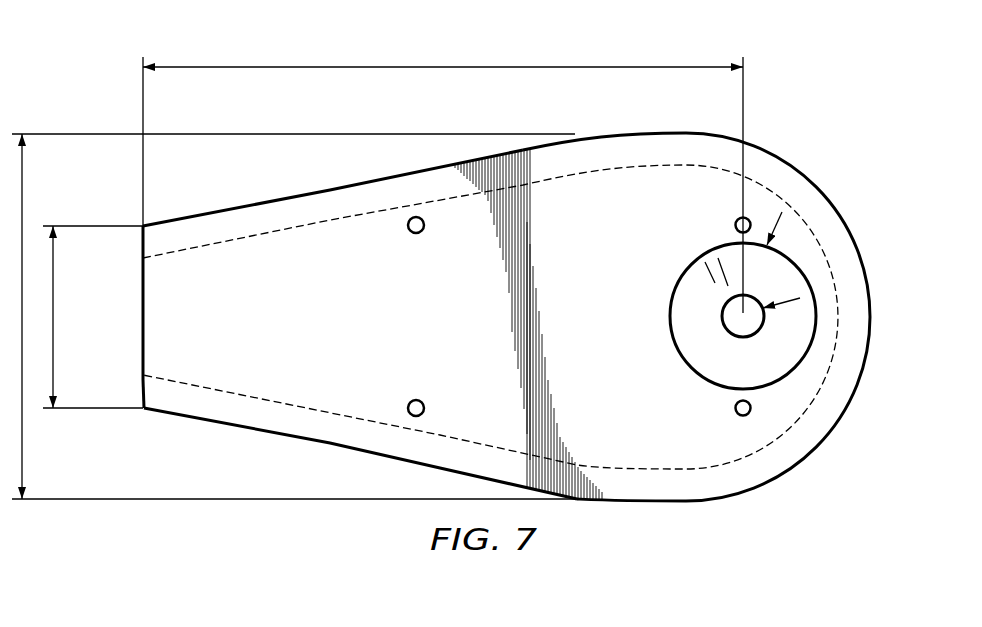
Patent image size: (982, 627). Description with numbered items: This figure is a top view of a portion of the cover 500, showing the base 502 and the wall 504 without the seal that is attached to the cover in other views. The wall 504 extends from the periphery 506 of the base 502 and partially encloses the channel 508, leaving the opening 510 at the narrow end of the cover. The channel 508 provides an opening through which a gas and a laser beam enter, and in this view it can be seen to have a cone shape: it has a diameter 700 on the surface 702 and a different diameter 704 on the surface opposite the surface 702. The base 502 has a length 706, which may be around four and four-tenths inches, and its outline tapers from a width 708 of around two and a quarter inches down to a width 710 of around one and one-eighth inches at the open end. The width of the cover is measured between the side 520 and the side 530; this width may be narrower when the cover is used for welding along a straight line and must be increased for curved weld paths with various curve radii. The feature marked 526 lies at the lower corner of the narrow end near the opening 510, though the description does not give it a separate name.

The cover 500 is at (105, 72).
The base 502 is at (780, 160).
The wall 504 is at (272, 435).
The periphery 506 is at (272, 201).
The channel 508 is at (755, 323).
The opening 510 is at (143, 316).
The side 520 is at (653, 133).
The lower left corner 526 is at (143, 390).
The side 530 is at (653, 501).
The diameter 700 is at (717, 386).
The surface 702 is at (466, 332).
The diameter 704 is at (719, 326).
The length 706 is at (443, 66).
The width 708 is at (22, 196).
The width 710 is at (53, 297).